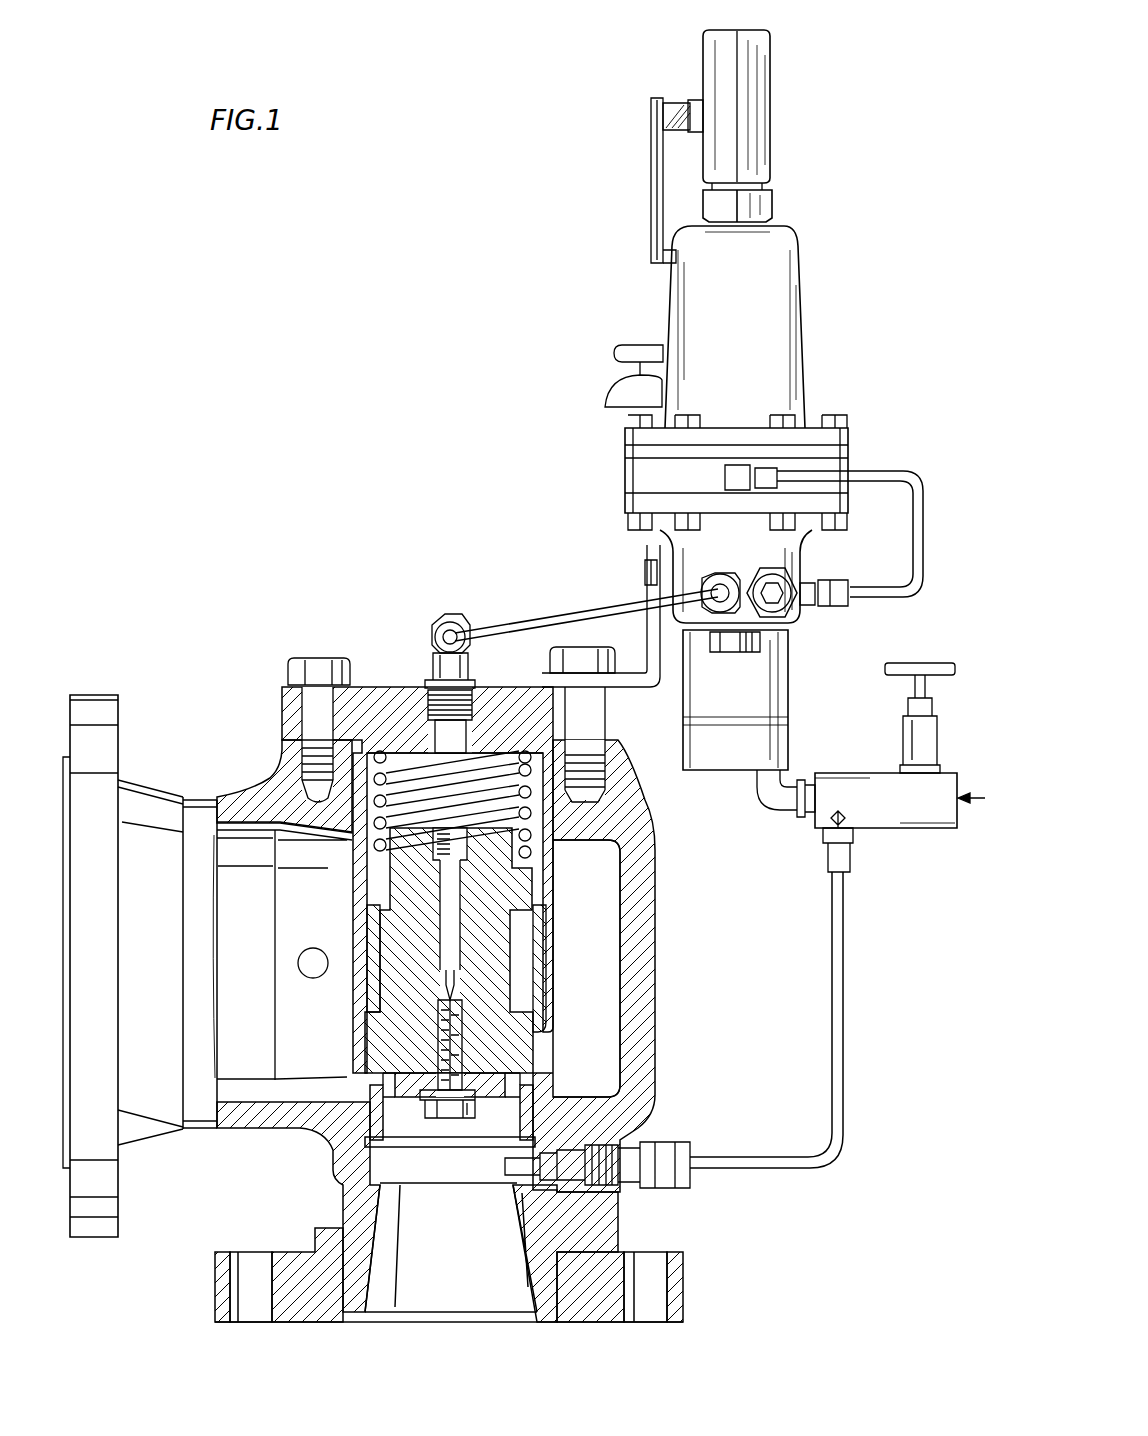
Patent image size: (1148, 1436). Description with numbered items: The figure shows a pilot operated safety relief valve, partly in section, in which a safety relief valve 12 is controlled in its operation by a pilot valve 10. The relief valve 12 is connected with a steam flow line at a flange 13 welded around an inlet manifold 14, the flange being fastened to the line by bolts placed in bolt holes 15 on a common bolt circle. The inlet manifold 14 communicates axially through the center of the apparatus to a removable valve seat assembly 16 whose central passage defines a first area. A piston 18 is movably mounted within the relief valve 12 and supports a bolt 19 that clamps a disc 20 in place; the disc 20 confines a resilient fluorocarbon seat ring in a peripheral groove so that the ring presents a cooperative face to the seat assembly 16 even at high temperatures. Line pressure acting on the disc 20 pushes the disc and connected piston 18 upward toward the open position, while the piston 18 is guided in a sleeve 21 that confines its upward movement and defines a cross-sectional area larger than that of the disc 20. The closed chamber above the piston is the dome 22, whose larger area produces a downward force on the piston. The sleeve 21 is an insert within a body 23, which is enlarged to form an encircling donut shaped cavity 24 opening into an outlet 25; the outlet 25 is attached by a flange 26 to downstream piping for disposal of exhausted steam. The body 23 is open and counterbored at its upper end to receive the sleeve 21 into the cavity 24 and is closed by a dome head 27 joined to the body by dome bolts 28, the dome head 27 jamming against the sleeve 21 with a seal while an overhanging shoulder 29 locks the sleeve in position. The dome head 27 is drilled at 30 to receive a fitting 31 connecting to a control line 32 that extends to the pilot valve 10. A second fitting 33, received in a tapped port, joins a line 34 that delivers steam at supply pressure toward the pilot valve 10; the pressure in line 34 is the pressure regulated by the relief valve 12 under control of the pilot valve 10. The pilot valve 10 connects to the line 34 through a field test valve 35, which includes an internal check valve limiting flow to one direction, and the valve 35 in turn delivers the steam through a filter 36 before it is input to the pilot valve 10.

The pilot valve 10 is at (548, 270).
The safety relief valve 12 is at (188, 702).
The flange 13 is at (685, 1290).
The inlet manifold 14 is at (530, 1270).
The bolt holes 15 is at (665, 1312).
The valve seat assembly 16 is at (372, 1147).
The piston 18 is at (525, 1052).
The bolt 19 is at (440, 1035).
The disc 20 is at (410, 1105).
The sleeve 21 is at (540, 975).
The dome 22 is at (372, 740).
The body 23 is at (655, 878).
The cavity 24 is at (588, 889).
The outlet 25 is at (260, 927).
The flange 26 is at (94, 693).
The dome head 27 is at (282, 700).
The dome bolts 28 is at (310, 657).
The overhanging shoulder 29 is at (655, 812).
The drilled opening 30 is at (418, 745).
The fitting 31 is at (450, 613).
The control line 32 is at (515, 617).
The fitting 33 is at (632, 1190).
The line 34 is at (840, 1072).
The field test valve 35 is at (888, 808).
The filter 36 is at (775, 683).